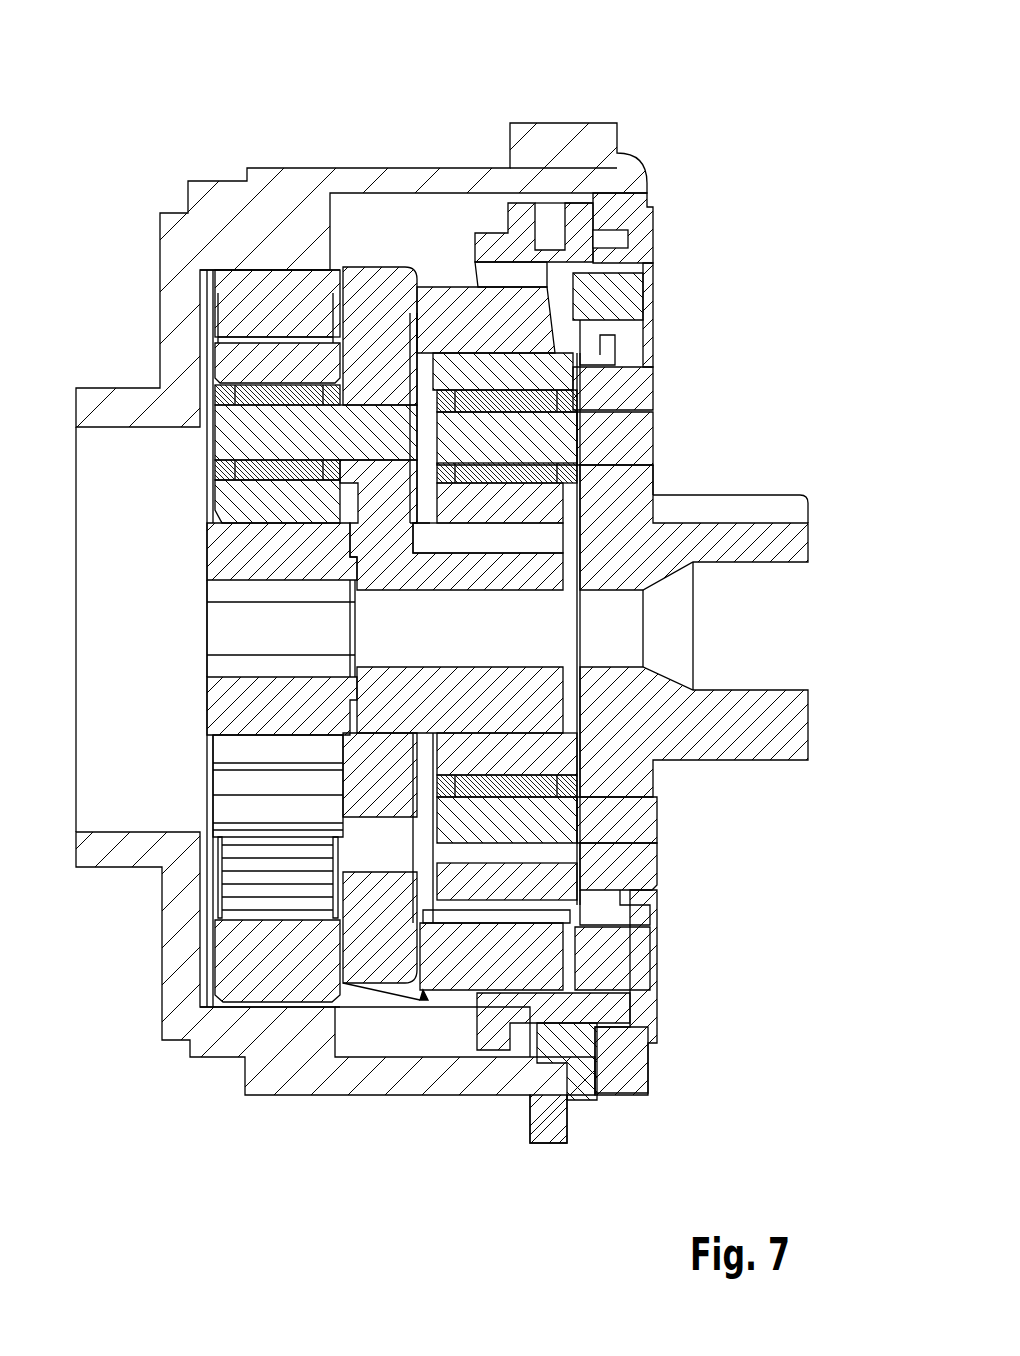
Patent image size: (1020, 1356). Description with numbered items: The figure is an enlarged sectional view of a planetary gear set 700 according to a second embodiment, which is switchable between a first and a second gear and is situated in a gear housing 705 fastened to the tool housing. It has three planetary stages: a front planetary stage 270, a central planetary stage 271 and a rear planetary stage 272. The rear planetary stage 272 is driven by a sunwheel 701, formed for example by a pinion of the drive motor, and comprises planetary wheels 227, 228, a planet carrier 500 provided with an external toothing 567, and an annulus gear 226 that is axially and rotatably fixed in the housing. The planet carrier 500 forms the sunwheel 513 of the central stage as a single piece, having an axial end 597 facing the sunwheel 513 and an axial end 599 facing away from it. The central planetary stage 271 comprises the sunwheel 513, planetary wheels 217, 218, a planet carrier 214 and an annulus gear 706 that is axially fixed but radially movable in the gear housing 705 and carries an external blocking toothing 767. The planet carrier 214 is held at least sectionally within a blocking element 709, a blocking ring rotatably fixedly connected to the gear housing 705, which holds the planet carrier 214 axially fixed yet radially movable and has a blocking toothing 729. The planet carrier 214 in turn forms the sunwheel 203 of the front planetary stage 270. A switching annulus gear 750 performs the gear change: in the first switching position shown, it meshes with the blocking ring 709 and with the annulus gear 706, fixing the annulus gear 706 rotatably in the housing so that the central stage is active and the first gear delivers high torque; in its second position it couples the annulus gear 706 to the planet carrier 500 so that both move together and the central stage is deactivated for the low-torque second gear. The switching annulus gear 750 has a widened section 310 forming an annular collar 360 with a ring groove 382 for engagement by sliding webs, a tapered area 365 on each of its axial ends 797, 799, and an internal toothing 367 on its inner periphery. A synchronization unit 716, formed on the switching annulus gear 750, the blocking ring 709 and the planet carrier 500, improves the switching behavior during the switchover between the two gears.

The planetary gear set 700 is at (90, 98).
The external toothing 567 is at (375, 258).
The synchronization unit 716 is at (460, 270).
The axial end 799 is at (465, 245).
The tapered area 365 is at (490, 245).
The widened section 310 is at (520, 198).
The switching annulus gear 750 is at (552, 195).
The annular collar 360 is at (577, 210).
The internal toothing 367 is at (587, 257).
The blocking toothing 729 is at (580, 283).
The external blocking toothing 767 is at (575, 360).
The planetary wheel 217 is at (635, 412).
The sunwheel 203 is at (758, 540).
The axial end 597 is at (428, 485).
The sunwheel 513 is at (473, 675).
The sunwheel 701 is at (218, 628).
The planetary wheel 227 is at (225, 358).
The planetary wheel 228 is at (225, 752).
The planet carrier 500 is at (367, 795).
The axial end 599 is at (340, 940).
The annulus gear 226 is at (230, 978).
The rear planetary stage 272 is at (320, 1032).
The central planetary stage 271 is at (458, 1005).
The ring groove 382 is at (548, 1015).
The gear housing 705 is at (558, 1125).
The front planetary stage 270 is at (690, 790).
The planet carrier 214 is at (648, 870).
The planetary wheel 218 is at (600, 920).
The annulus gear 706 is at (560, 968).
The axial end 797 is at (635, 1006).
The blocking element 709 is at (622, 1073).